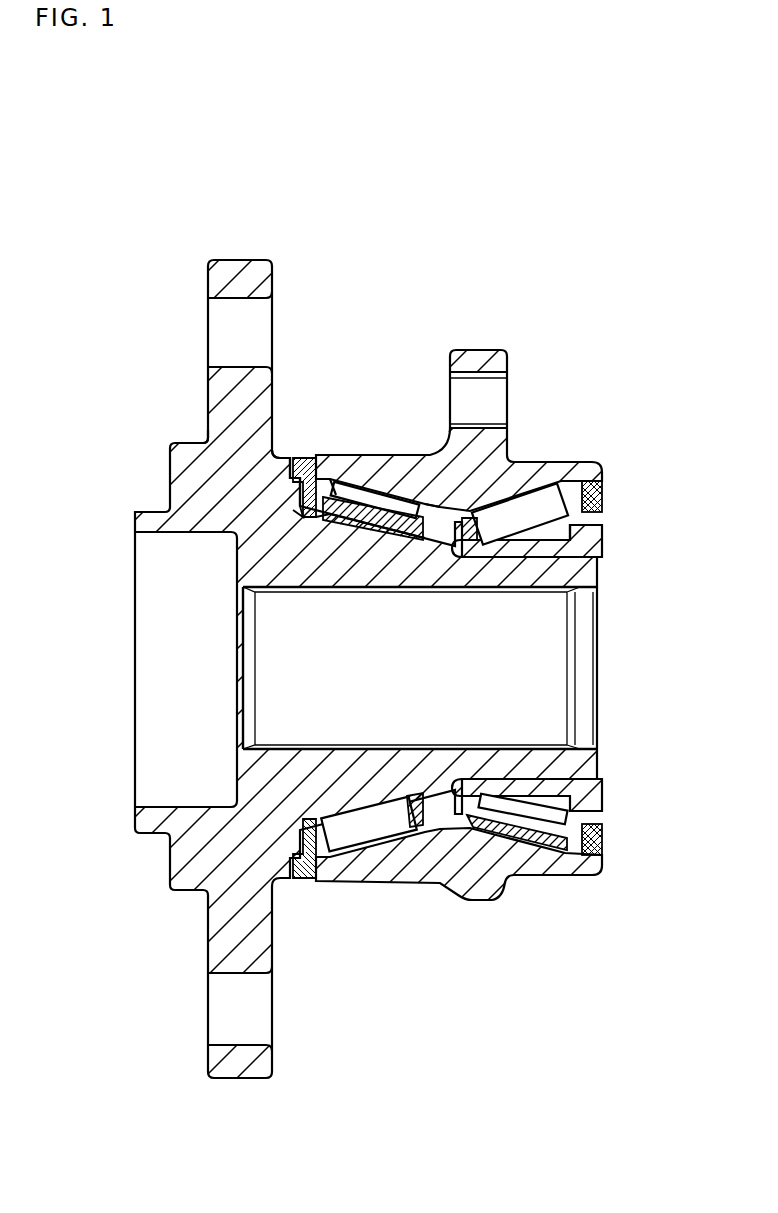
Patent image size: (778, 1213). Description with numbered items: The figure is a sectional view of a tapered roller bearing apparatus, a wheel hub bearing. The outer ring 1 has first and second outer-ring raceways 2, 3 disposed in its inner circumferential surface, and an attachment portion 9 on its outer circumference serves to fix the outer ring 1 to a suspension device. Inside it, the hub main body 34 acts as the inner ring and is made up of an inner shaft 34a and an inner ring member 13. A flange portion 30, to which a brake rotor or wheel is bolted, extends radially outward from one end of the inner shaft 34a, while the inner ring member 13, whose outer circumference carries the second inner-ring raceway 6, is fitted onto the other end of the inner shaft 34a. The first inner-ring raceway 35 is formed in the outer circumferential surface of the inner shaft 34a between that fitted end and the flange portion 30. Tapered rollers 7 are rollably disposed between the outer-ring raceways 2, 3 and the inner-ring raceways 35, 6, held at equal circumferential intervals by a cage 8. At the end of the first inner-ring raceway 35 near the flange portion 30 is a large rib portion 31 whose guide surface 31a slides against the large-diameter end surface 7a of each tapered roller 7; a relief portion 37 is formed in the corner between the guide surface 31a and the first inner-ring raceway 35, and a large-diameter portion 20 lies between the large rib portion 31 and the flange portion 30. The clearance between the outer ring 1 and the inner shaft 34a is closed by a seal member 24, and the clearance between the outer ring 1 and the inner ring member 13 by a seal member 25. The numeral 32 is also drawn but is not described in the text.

The outer ring 1 is at (519, 446).
The first outer-ring raceway 2 is at (372, 492).
The second outer-ring raceway 3 is at (506, 513).
The second inner-ring raceway 6 is at (568, 524).
The tapered roller 7 is at (356, 490).
The large-diameter end surface 7a is at (336, 488).
The cage 8 is at (362, 542).
The attachment portion 9 is at (492, 350).
The inner ring member 13 is at (600, 792).
The large-diameter portion 20 is at (280, 506).
The seal member 24 is at (204, 446).
The seal member 25 is at (604, 842).
The flange portion 30 is at (244, 270).
The large rib portion 31 is at (316, 457).
The guide surface 31a is at (330, 527).
The inner ring 32 is at (566, 550).
The hub main body 34 is at (172, 856).
The inner shaft 34a is at (288, 575).
The first inner-ring raceway 35 is at (350, 535).
The relief portion 37 is at (300, 518).